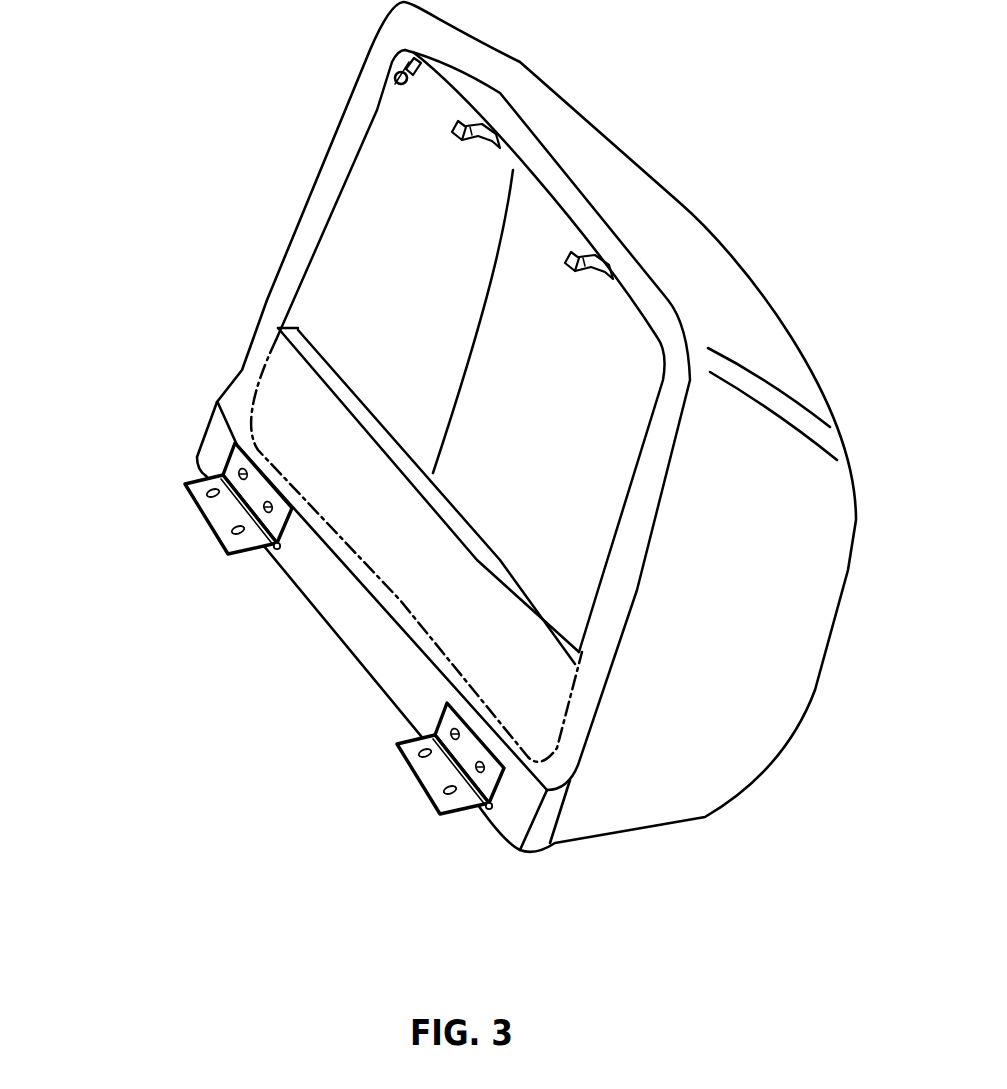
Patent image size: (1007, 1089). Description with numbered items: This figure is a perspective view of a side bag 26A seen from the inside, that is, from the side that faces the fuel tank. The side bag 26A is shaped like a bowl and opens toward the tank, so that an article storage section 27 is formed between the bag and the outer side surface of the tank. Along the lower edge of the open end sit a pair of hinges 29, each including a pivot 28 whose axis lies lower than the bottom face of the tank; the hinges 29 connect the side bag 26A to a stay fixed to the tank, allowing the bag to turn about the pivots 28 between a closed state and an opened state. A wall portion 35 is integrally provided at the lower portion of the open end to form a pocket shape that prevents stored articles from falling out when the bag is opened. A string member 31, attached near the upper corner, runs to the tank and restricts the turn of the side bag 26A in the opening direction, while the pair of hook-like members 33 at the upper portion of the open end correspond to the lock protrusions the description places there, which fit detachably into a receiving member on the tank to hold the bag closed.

The side bag 26A is at (807, 600).
The article storage section 27 is at (592, 454).
The pivot 28 is at (277, 552).
The hinge 29 is at (217, 512).
The string member 31 is at (396, 77).
The hook 33 is at (472, 147).
The wall portion 35 is at (462, 528).